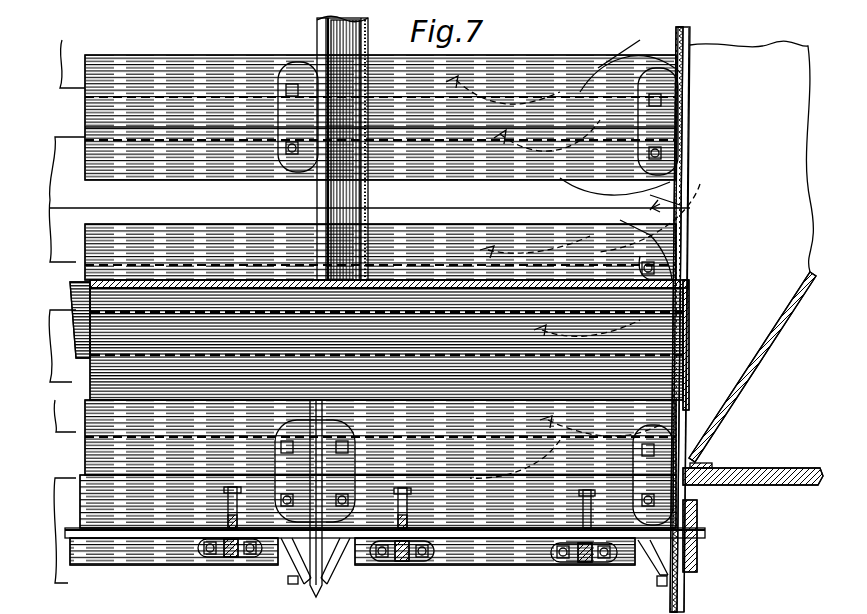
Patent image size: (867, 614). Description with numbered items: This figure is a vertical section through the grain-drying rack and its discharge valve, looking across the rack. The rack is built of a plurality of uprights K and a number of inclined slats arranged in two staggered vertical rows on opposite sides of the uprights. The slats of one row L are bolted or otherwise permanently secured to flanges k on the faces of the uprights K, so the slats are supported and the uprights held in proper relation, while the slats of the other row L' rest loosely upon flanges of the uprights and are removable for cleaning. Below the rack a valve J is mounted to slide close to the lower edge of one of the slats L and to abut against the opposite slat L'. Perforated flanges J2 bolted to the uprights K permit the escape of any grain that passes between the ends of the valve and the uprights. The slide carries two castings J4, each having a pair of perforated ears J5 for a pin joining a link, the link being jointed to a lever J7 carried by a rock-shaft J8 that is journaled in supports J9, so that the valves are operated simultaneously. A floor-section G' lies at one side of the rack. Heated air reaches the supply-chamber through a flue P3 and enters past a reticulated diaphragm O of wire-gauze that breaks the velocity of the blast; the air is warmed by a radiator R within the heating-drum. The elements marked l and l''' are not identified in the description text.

The slat L is at (353, 265).
The slat L' is at (357, 311).
The slat top strip l is at (389, 207).
The slat edge l''' is at (406, 345).
The upright K is at (318, 192).
The flange k is at (660, 118).
The reticulated diaphragm O is at (689, 158).
The flue P3 is at (752, 251).
The floor-section G' is at (753, 456).
The support J9 is at (698, 554).
The radiator R is at (384, 462).
The rock-shaft J8 is at (198, 530).
The valve J is at (574, 562).
The flange J2 is at (296, 582).
The casting J4 is at (214, 560).
The ear J5 is at (238, 562).
The lever J7 is at (412, 500).